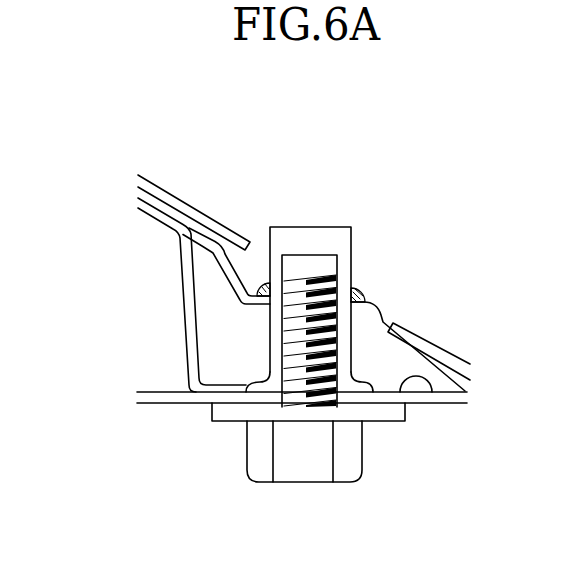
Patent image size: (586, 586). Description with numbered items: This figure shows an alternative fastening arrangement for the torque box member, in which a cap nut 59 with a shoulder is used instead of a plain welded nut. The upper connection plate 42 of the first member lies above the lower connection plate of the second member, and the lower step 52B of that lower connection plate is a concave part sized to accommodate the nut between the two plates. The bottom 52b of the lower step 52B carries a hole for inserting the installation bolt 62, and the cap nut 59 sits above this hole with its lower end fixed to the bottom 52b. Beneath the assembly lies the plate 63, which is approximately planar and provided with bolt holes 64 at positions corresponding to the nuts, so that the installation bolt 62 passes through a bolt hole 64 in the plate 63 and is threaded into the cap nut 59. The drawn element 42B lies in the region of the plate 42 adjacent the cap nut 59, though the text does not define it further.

The upper connection plate 42 is at (377, 298).
The bracket portion 42B is at (254, 287).
The lower step 52B is at (184, 315).
The bottom of the lower step 52b is at (436, 406).
The cap nut 59 is at (327, 227).
The installation bolt 62 is at (254, 458).
The plate 63 is at (150, 406).
The bolt holes 64 is at (322, 406).